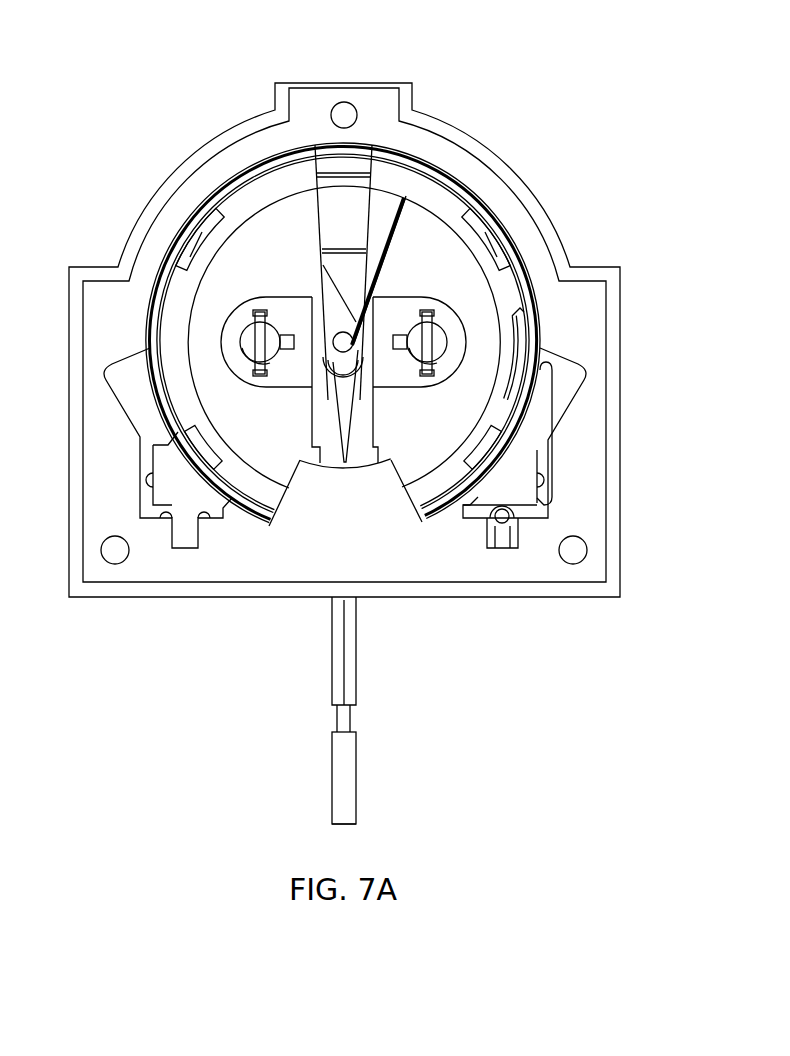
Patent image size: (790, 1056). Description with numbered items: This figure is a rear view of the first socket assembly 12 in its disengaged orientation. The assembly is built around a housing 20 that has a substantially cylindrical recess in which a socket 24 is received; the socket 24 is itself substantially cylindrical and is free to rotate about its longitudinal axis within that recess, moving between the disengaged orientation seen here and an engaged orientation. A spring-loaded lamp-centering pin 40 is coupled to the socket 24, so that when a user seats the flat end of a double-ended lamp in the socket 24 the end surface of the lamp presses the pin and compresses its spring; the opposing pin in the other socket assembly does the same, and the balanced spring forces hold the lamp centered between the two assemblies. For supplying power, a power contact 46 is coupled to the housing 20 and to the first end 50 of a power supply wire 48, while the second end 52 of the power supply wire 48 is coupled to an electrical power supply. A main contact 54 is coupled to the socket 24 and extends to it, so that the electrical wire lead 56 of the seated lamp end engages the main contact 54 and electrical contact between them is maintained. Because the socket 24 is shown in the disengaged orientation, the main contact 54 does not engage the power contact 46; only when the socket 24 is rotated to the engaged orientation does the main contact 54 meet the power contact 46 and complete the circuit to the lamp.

The first socket assembly 12 is at (158, 48).
The housing 20 is at (143, 222).
The socket 24 is at (206, 308).
The spring-loaded lamp-centering pin 40 is at (248, 338).
The power contact 46 is at (507, 387).
The power supply wire 48 is at (348, 750).
The first end of power supply wire 50 is at (504, 524).
The second end of power supply wire 52 is at (350, 818).
The main contact 54 is at (343, 397).
The electrical wire lead 56 is at (336, 350).